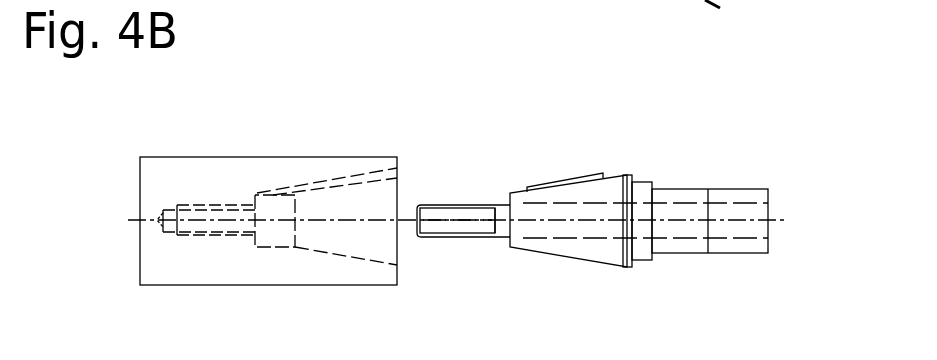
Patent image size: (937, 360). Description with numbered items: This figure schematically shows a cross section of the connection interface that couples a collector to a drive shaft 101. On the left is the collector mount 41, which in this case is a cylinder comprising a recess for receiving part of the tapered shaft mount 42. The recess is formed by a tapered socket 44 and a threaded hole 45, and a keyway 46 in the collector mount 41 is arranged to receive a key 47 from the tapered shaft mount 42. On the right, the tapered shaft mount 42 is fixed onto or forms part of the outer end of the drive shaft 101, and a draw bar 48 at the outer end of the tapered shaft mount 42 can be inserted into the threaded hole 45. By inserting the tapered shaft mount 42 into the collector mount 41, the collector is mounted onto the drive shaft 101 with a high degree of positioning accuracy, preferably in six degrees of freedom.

The collector mount 41 is at (185, 165).
The tapered shaft mount 42 is at (620, 175).
The tapered socket 44 is at (345, 258).
The threaded hole 45 is at (210, 237).
The keyway 46 is at (340, 180).
The key 47 is at (552, 182).
The draw bar 48 is at (453, 237).
The drive shaft 101 is at (688, 192).